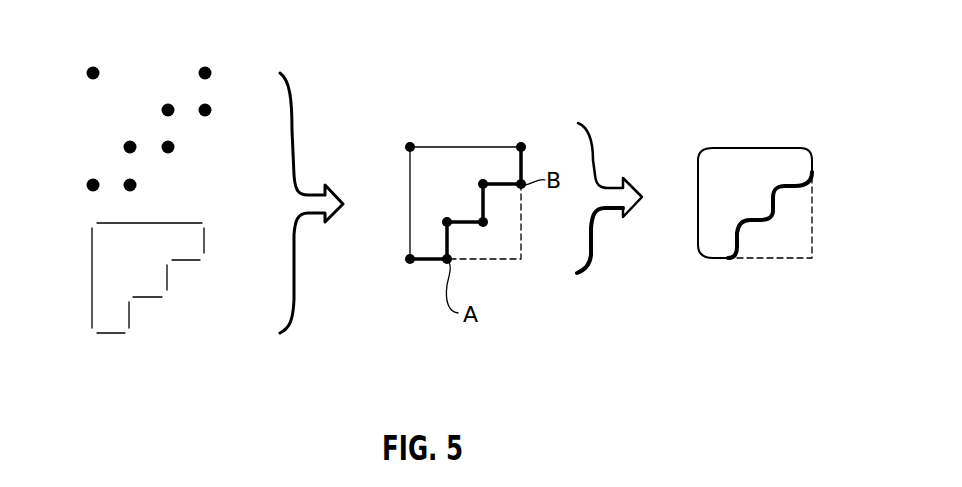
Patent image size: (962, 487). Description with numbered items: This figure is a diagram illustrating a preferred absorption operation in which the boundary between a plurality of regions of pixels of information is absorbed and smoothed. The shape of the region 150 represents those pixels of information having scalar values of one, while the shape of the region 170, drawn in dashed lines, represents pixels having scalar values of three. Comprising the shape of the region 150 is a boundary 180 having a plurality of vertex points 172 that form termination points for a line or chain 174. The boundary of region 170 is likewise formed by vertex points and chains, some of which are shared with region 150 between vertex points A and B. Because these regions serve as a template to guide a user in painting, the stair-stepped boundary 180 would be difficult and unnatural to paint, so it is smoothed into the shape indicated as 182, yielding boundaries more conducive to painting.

The region 150 is at (457, 153).
The region 170 is at (508, 240).
The vertex points 172 is at (199, 70).
The line or chain 174 is at (113, 223).
The boundary 180 is at (409, 233).
The smoothed shape 182 is at (758, 158).